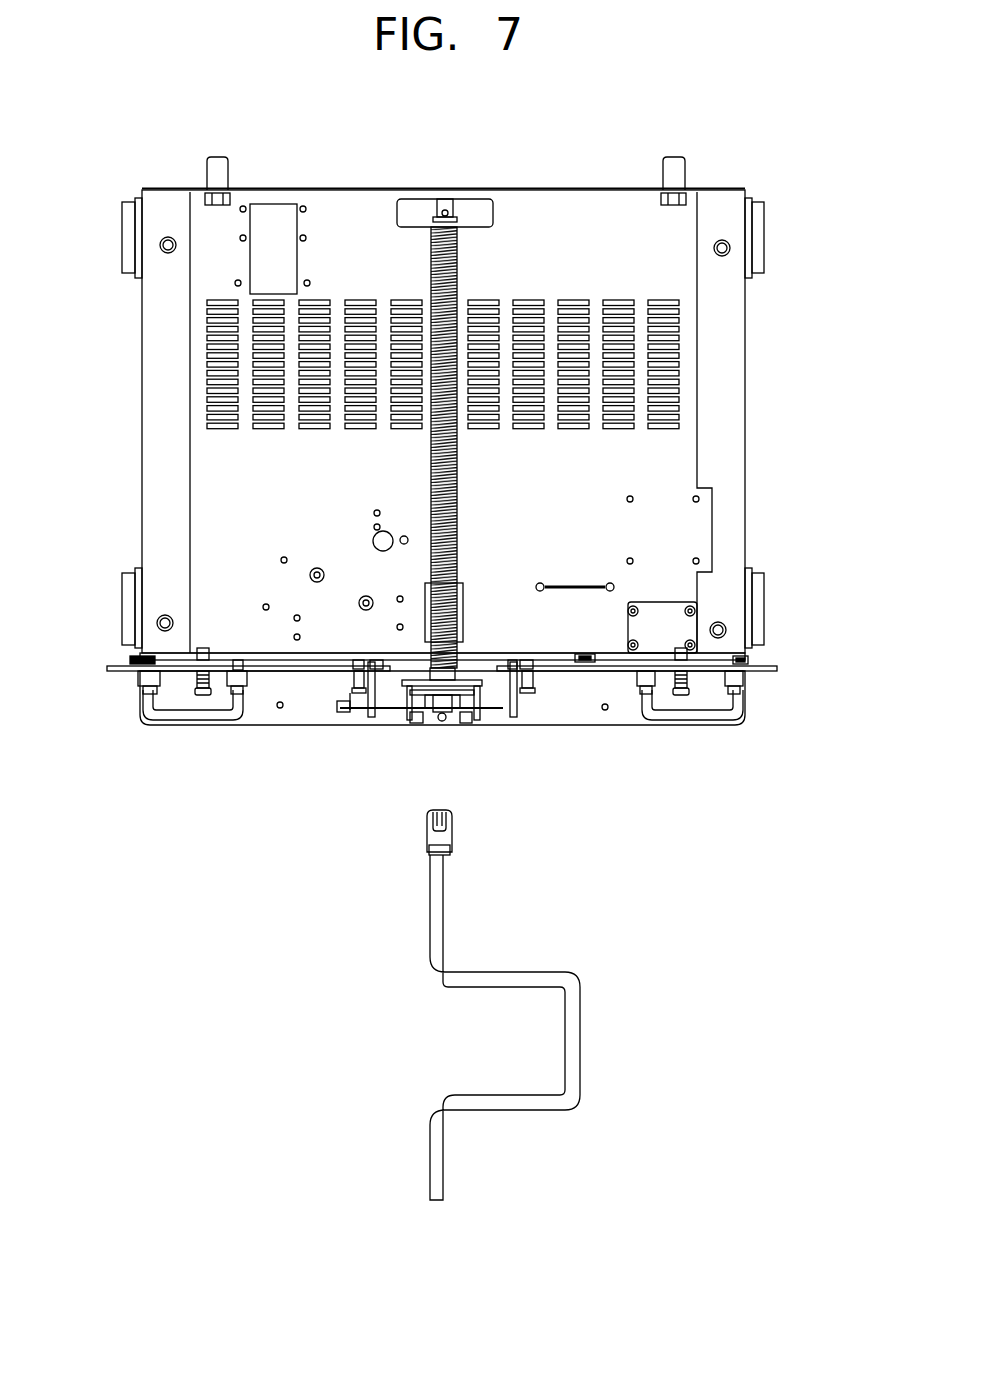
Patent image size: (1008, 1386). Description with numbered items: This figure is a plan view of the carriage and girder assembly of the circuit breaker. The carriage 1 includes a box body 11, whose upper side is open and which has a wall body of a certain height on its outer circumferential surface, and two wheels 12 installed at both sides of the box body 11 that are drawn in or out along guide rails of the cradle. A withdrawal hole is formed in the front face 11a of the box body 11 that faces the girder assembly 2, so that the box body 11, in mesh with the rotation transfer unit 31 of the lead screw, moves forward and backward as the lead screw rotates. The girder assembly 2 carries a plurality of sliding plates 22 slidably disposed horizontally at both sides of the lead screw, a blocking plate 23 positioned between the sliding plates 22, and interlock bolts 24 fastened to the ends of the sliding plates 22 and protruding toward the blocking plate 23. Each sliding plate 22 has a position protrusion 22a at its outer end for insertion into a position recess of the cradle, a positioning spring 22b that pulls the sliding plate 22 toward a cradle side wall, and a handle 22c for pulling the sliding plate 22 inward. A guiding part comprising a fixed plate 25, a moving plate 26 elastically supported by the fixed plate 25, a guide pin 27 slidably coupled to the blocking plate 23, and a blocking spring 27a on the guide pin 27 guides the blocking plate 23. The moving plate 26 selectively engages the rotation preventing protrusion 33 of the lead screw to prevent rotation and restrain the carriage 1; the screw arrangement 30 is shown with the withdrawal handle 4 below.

The carriage 1 is at (138, 510).
The box body 11 is at (148, 534).
The wheels 12 is at (130, 595).
The girder assembly 2 is at (254, 727).
The sliding plates 22 is at (285, 670).
The position protrusion 22a is at (107, 668).
The positioning spring 22b is at (133, 660).
The handle 22c is at (193, 718).
The blocking plate 23 is at (383, 708).
The interlock bolts 24 is at (370, 712).
The fixed plate 25 is at (415, 683).
The moving plate 26 is at (425, 708).
The guide pin 27 is at (417, 722).
The blocking spring 27a is at (472, 718).
The elevation adjusting unit 30 is at (426, 291).
The rotation transfer unit 31 is at (458, 253).
The rotation preventing protrusion 33 is at (452, 700).
The face facing the girder assembly 11a is at (603, 662).
The withdrawal handle 4 is at (441, 990).